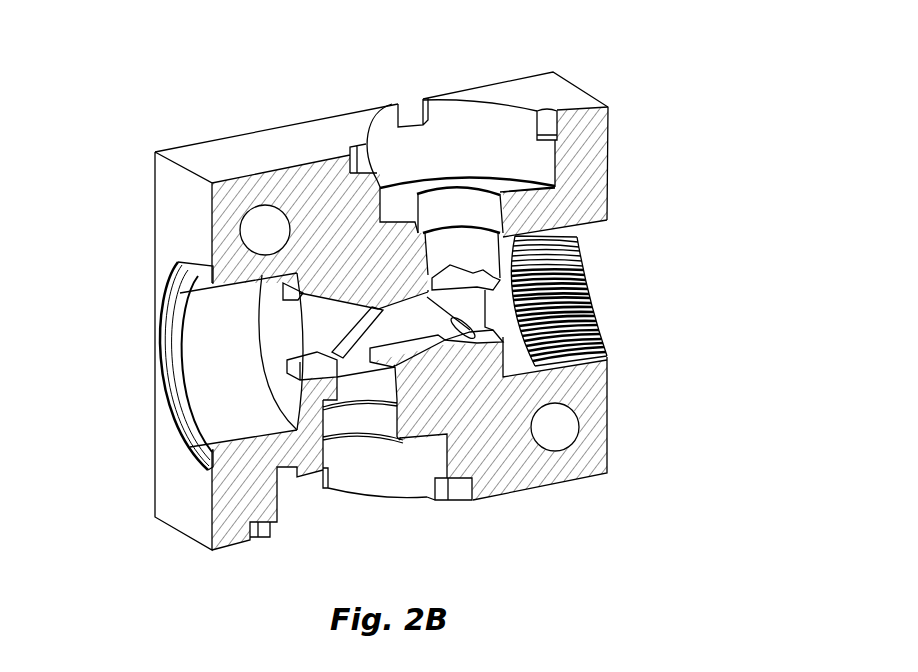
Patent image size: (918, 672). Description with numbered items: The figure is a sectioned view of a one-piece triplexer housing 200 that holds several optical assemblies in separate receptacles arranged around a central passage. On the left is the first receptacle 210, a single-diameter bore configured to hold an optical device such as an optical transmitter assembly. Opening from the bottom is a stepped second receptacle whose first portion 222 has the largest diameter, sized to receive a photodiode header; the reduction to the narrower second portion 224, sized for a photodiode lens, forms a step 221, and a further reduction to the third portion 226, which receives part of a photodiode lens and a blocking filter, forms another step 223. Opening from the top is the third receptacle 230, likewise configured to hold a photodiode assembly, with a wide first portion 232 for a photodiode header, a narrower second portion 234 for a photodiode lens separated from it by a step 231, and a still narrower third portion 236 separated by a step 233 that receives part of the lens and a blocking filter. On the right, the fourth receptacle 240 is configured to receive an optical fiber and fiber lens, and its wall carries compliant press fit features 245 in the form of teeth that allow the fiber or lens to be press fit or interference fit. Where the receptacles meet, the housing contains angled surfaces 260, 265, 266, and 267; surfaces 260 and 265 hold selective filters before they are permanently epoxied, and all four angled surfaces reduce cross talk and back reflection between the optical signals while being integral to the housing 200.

The triplexer housing 200 is at (640, 63).
The first receptacle 210 is at (197, 368).
The step 221 is at (398, 400).
The first portion 222 is at (375, 465).
The step 223 is at (440, 338).
The second portion 224 is at (360, 418).
The third portion 226 is at (360, 383).
The third receptacle 230 is at (410, 108).
The step 231 is at (548, 187).
The first portion 232 is at (467, 144).
The step 233 is at (505, 238).
The second portion 234 is at (460, 210).
The third portion 236 is at (461, 279).
The fourth receptacle 240 is at (614, 328).
The compliant press fit features 245 is at (607, 357).
The angled surface 260 is at (478, 333).
The angled surface 265 is at (260, 365).
The angled surface 266 is at (460, 330).
The angled surface 267 is at (365, 302).